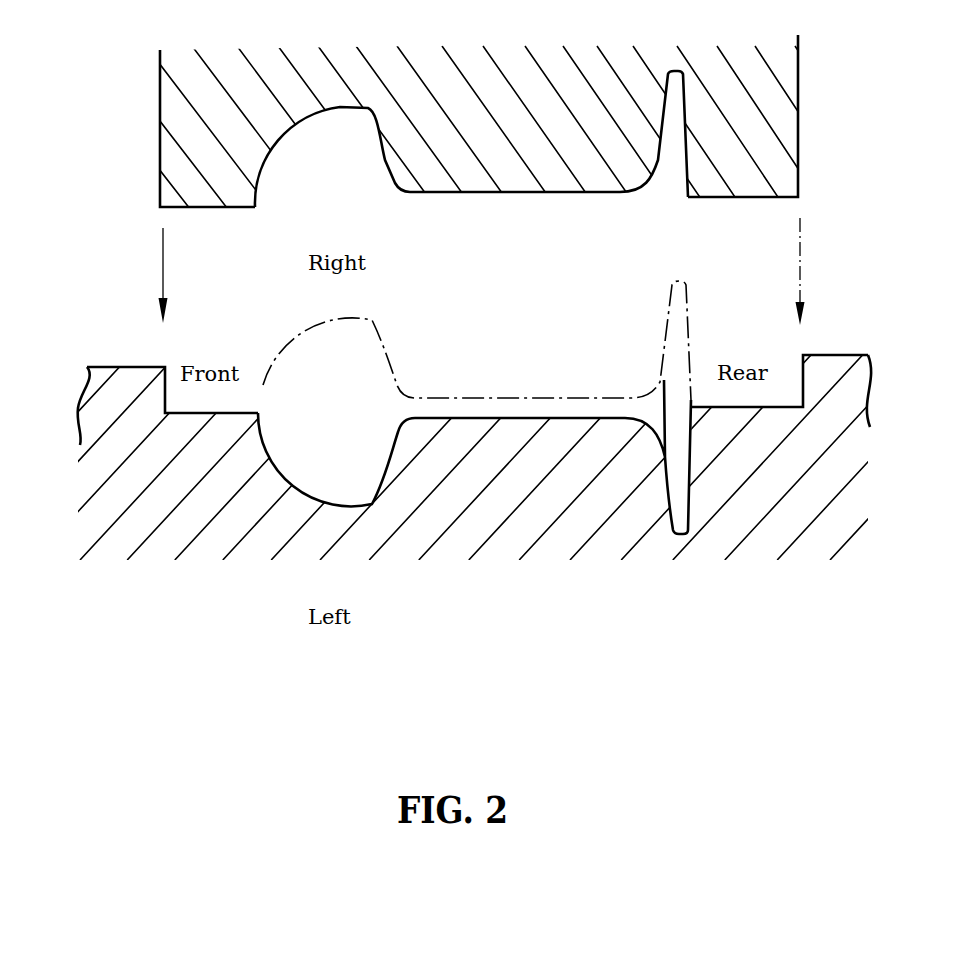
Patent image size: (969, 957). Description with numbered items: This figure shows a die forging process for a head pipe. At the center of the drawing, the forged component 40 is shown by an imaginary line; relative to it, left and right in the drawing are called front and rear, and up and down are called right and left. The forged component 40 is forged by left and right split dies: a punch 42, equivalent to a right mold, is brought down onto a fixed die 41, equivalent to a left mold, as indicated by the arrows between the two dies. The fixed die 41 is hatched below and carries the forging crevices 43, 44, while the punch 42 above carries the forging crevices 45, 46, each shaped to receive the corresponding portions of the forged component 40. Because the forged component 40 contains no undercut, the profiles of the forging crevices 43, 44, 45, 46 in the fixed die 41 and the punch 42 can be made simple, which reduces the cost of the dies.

The forged component 40 is at (392, 355).
The fixed die 41 is at (122, 367).
The punch 42 is at (158, 105).
The forging crevice 43 is at (297, 467).
The forging crevice 44 is at (685, 463).
The forging crevice 45 is at (340, 109).
The forging crevice 46 is at (690, 147).